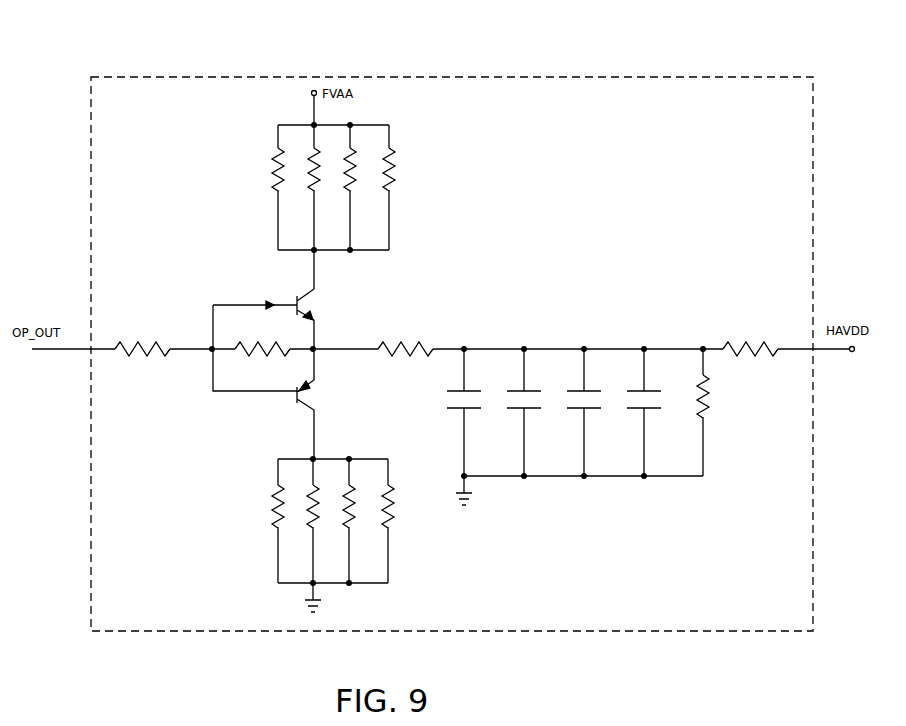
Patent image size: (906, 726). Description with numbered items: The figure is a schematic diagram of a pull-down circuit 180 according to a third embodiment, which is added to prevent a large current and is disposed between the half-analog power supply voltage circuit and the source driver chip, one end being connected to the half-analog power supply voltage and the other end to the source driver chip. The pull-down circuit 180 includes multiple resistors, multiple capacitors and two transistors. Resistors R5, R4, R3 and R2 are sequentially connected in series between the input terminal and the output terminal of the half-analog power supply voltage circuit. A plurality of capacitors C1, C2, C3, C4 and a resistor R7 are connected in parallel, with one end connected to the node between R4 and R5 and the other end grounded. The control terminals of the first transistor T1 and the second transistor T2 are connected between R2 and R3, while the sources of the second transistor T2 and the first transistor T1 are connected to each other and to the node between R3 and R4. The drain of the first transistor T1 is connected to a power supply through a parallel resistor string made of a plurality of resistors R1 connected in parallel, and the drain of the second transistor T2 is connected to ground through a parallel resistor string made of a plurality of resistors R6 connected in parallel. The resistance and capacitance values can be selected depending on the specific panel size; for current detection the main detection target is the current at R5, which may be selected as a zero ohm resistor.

The pull-down circuit 180 is at (664, 141).
The resistors R1 is at (336, 187).
The resistor R2 is at (142, 336).
The resistor R3 is at (263, 336).
The resistor R4 is at (407, 336).
The resistor R5 is at (753, 336).
The resistors R6 is at (323, 521).
The resistor R7 is at (712, 412).
The first transistor T1 is at (320, 299).
The second transistor T2 is at (320, 404).
The capacitor C1 is at (474, 412).
The capacitor C2 is at (534, 412).
The capacitor C3 is at (594, 412).
The capacitor C4 is at (654, 412).